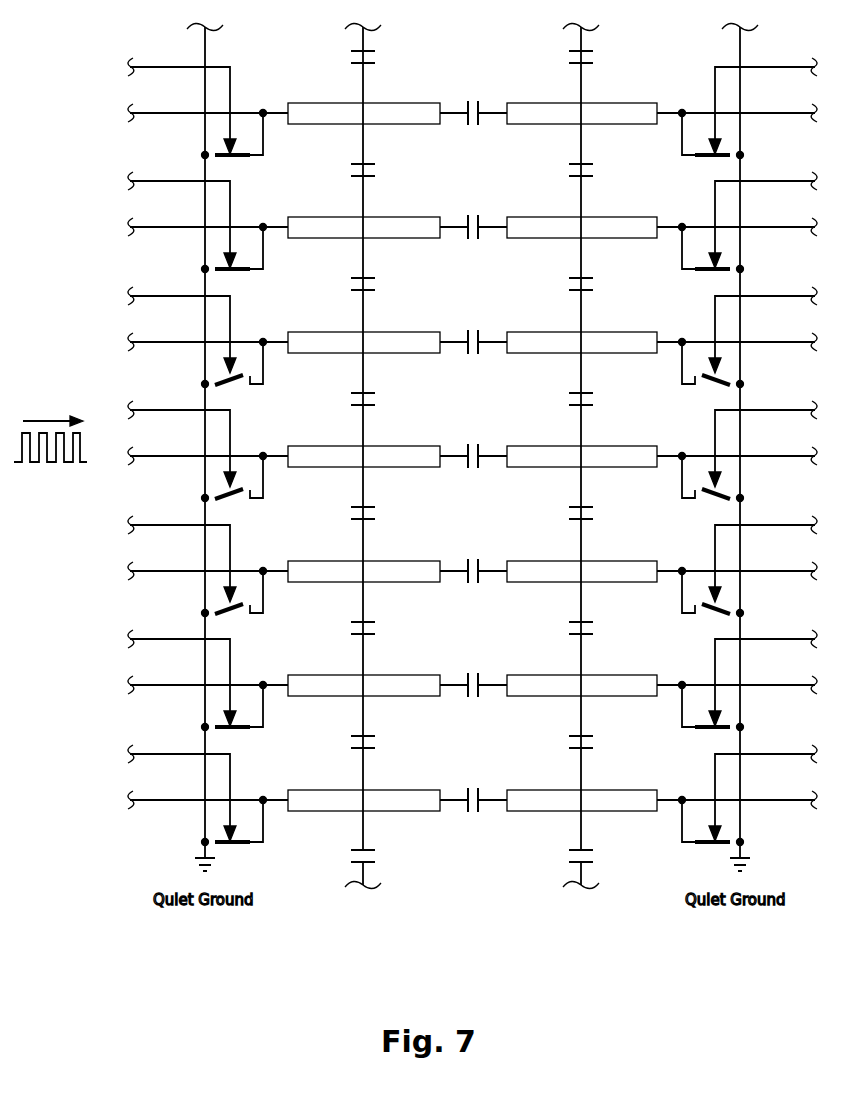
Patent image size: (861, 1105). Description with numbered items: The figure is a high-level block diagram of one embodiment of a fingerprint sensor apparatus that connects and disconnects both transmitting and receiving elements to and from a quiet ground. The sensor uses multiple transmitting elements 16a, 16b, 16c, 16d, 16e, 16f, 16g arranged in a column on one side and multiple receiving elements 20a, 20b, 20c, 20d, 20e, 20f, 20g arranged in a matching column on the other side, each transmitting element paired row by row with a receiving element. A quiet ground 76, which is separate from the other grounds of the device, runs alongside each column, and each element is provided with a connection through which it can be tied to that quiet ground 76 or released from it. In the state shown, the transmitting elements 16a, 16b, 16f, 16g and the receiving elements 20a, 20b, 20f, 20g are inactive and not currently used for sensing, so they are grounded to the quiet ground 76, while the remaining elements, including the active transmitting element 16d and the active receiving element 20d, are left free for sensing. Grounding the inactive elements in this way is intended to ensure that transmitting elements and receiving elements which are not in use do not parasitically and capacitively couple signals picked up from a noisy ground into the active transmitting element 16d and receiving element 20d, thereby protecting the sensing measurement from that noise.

The transmitting element 16a is at (316, 112).
The transmitting element 16b is at (316, 226).
The transmitting element 16c is at (316, 341).
The transmitting element 16d is at (316, 455).
The transmitting element 16e is at (316, 570).
The transmitting element 16f is at (316, 684).
The transmitting element 16g is at (316, 799).
The receiving element 20a is at (628, 112).
The receiving element 20b is at (628, 226).
The receiving element 20c is at (628, 341).
The receiving element 20d is at (628, 455).
The receiving element 20e is at (628, 570).
The receiving element 20f is at (628, 684).
The receiving element 20g is at (628, 799).
The quiet ground 76 is at (200, 851).